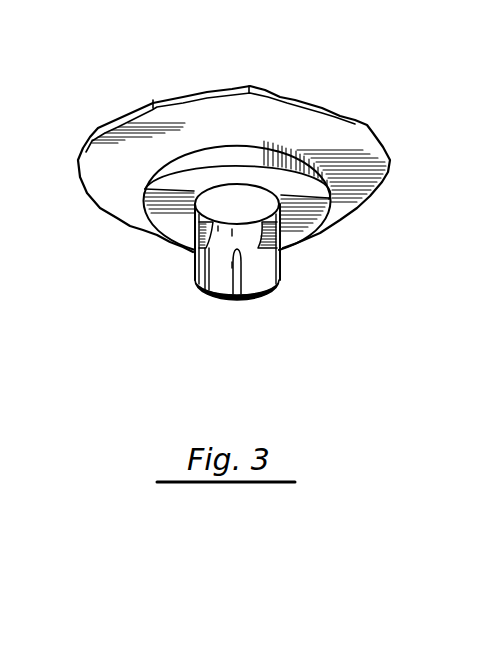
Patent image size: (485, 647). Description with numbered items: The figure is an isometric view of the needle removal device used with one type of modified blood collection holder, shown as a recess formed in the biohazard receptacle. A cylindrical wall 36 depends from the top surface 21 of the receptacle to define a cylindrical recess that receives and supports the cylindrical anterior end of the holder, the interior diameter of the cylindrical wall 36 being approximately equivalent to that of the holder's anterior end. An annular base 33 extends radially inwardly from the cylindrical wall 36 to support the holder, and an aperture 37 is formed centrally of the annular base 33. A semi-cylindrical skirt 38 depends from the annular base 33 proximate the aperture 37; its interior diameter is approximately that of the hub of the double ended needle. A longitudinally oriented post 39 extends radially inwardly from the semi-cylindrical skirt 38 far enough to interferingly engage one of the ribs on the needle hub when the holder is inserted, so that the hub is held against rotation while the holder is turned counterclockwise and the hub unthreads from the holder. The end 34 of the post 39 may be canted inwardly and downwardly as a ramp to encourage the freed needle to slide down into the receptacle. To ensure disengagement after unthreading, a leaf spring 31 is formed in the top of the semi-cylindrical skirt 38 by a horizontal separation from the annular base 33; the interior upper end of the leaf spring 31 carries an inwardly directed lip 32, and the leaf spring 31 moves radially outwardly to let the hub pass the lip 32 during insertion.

The top surface 21 is at (118, 122).
The leaf spring 31 is at (200, 214).
The lip 32 is at (218, 222).
The annular base 33 is at (162, 217).
The end of the post 34 is at (240, 250).
The cylindrical wall 36 is at (192, 155).
The aperture 37 is at (243, 201).
The semi-cylindrical skirt 38 is at (261, 274).
The post 39 is at (233, 272).